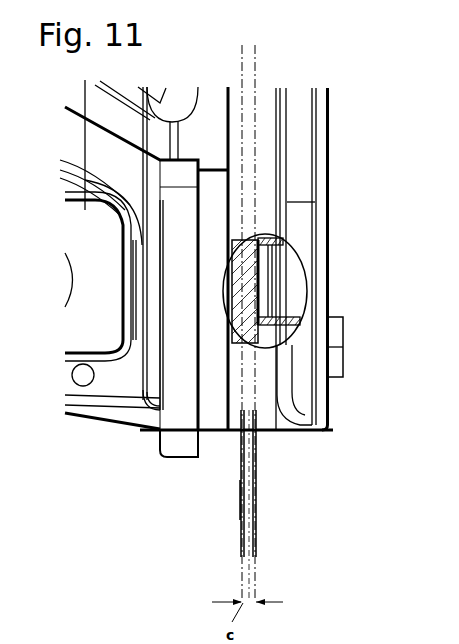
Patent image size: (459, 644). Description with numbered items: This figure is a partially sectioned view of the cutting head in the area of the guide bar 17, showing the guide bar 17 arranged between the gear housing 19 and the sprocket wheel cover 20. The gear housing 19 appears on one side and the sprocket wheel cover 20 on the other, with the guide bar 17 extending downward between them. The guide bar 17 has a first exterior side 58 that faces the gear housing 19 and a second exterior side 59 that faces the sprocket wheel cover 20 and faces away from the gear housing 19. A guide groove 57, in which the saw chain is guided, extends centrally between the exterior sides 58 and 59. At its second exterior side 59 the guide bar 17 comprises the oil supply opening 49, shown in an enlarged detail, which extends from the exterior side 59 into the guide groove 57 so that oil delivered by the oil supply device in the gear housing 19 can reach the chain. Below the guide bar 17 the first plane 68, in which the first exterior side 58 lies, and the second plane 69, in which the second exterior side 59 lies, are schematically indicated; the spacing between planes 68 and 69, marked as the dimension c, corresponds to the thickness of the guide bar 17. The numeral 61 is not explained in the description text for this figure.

The gear housing 19 is at (207, 100).
The sprocket wheel cover 20 is at (312, 120).
The oil supply opening 49 is at (258, 267).
The guide bar 17 is at (257, 476).
The guide groove 57 is at (240, 500).
The first exterior side 58 is at (239, 538).
The second exterior side 59 is at (258, 538).
The first plane 68 is at (242, 586).
The second plane 69 is at (256, 586).
The center axis 61 is at (250, 600).